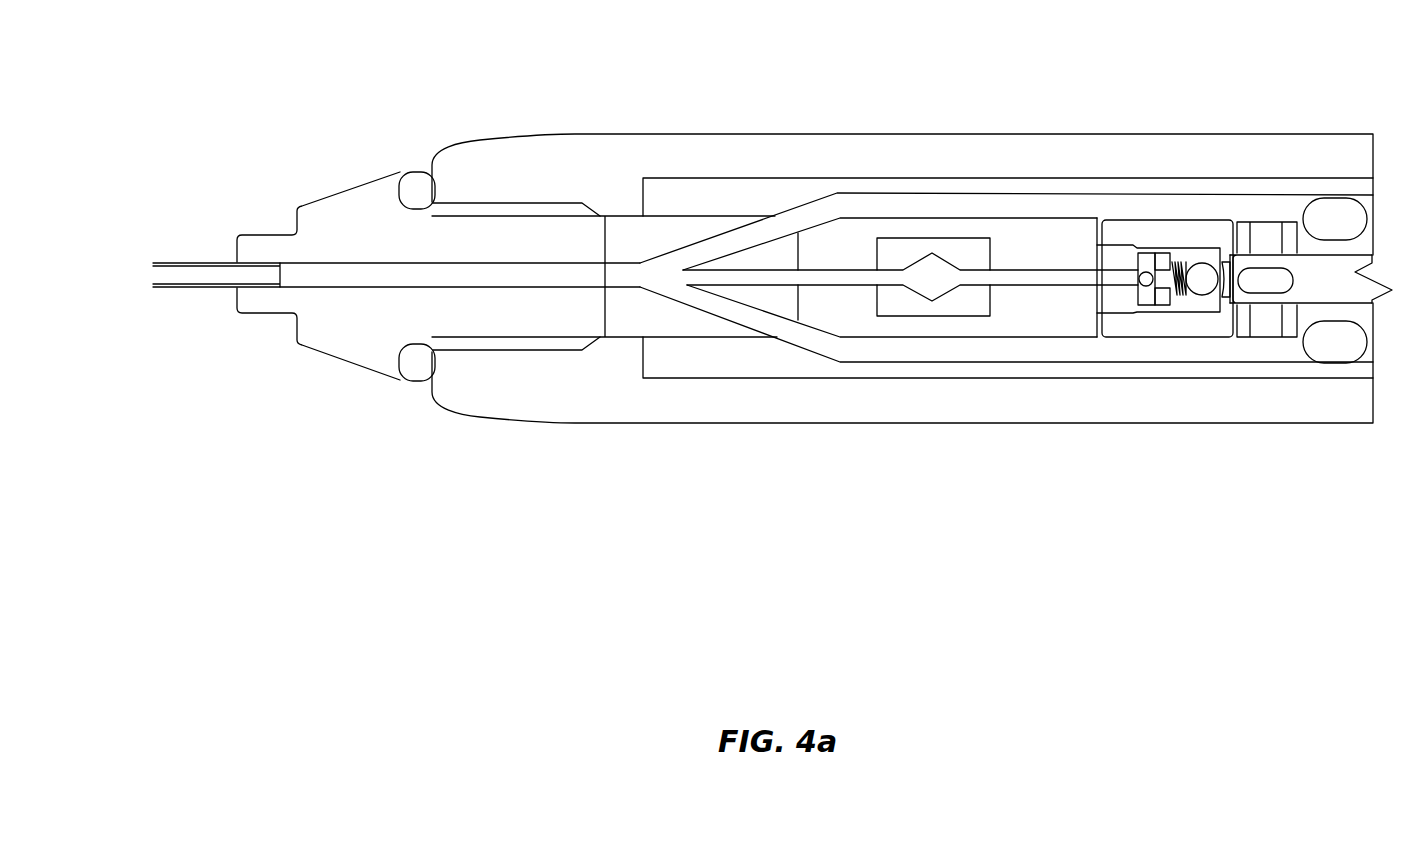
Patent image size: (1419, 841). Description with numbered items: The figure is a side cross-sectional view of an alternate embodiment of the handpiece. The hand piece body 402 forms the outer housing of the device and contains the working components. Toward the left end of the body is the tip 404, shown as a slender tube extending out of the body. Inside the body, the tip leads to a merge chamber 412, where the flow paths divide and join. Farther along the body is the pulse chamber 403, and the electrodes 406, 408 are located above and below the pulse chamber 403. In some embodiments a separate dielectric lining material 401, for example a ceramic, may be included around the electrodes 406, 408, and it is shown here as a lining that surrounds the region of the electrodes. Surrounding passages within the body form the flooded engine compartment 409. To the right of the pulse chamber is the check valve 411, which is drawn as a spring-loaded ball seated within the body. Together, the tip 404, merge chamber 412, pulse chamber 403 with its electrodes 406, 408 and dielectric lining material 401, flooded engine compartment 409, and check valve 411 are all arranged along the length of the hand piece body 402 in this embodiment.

The dielectric lining material 401 is at (760, 192).
The hand piece body 402 is at (1233, 134).
The pulse chamber 403 is at (942, 277).
The tip 404 is at (165, 288).
The electrode 406 is at (920, 247).
The electrode 408 is at (922, 310).
The flooded engine compartment 409 is at (1047, 205).
The check valve 411 is at (1200, 288).
The merge chamber 412 is at (670, 277).